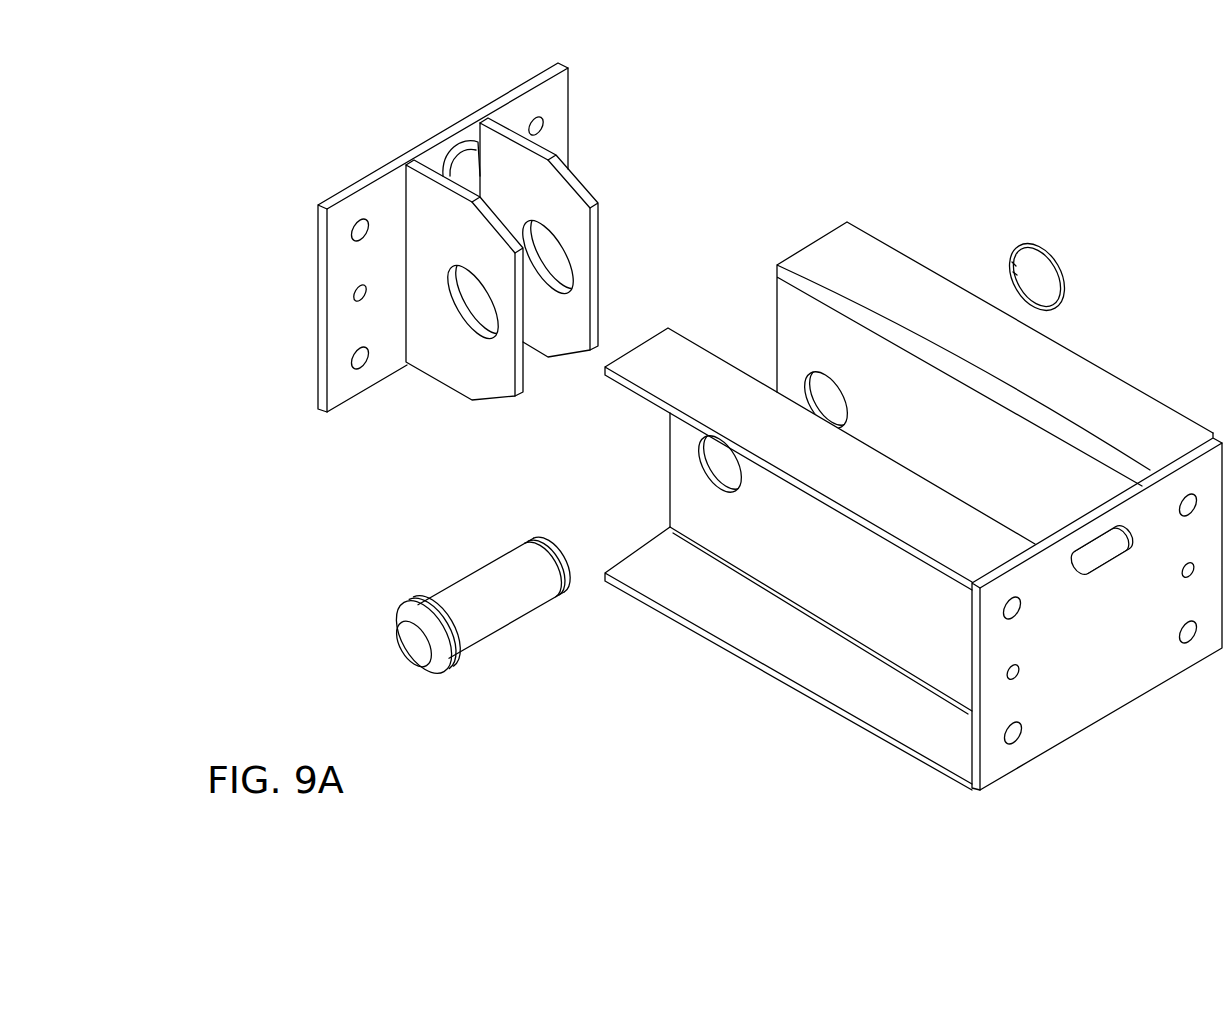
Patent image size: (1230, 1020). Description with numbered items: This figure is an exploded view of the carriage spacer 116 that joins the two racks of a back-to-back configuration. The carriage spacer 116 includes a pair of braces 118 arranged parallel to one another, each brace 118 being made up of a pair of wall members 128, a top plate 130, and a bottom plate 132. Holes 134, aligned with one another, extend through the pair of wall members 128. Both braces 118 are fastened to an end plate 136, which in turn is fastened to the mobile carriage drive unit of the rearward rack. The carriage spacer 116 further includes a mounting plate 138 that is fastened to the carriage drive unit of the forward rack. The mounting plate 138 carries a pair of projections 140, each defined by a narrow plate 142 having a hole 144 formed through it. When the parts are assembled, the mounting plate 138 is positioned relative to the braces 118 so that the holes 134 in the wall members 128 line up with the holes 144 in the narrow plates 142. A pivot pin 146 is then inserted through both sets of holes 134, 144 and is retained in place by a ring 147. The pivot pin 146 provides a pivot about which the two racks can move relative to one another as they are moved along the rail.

The carriage spacer 116 is at (1127, 250).
The brace 118 is at (916, 509).
The wall member 128 is at (890, 563).
The top plate 130 is at (692, 352).
The bottom plate 132 is at (940, 745).
The hole 134 is at (733, 477).
The end plate 136 is at (1110, 693).
The mounting plate 138 is at (414, 144).
The projection 140 is at (513, 280).
The narrow plate 142 is at (507, 368).
The hole 144 is at (472, 302).
The pivot pin 146 is at (453, 590).
The ring 147 is at (1032, 246).